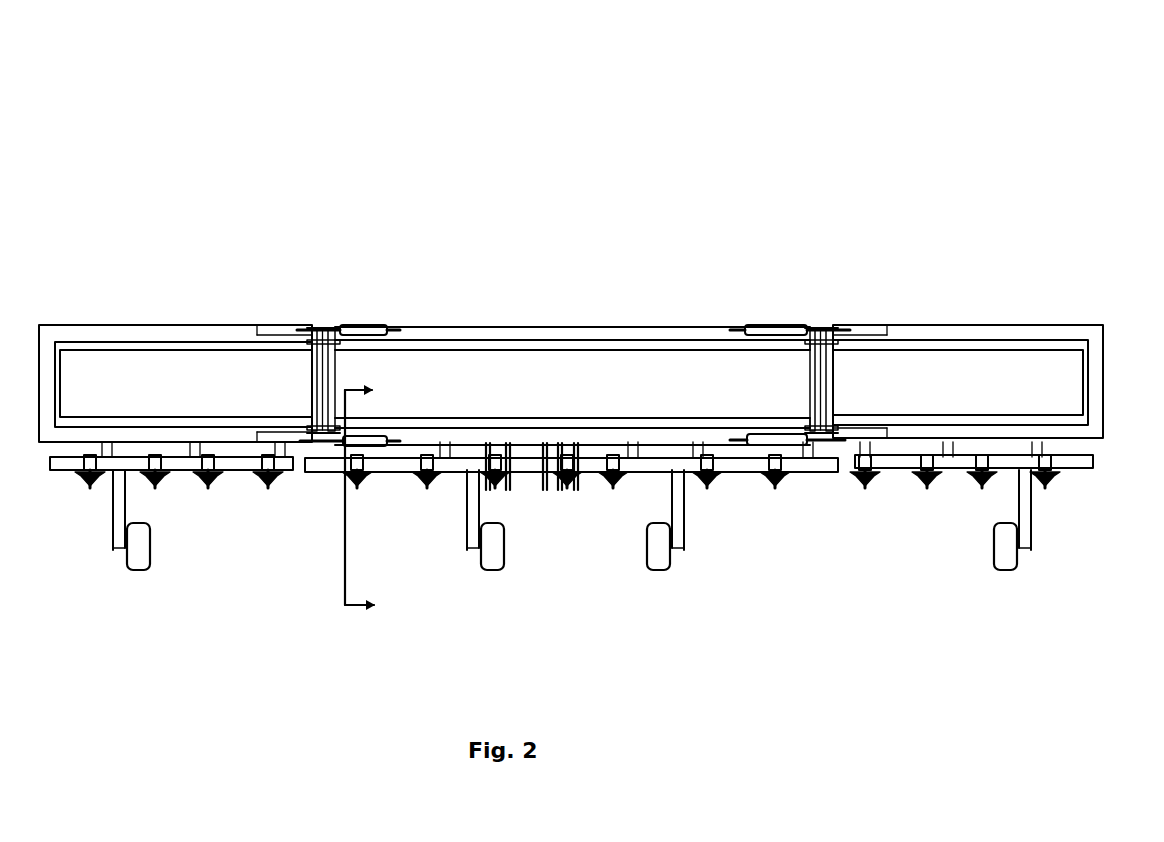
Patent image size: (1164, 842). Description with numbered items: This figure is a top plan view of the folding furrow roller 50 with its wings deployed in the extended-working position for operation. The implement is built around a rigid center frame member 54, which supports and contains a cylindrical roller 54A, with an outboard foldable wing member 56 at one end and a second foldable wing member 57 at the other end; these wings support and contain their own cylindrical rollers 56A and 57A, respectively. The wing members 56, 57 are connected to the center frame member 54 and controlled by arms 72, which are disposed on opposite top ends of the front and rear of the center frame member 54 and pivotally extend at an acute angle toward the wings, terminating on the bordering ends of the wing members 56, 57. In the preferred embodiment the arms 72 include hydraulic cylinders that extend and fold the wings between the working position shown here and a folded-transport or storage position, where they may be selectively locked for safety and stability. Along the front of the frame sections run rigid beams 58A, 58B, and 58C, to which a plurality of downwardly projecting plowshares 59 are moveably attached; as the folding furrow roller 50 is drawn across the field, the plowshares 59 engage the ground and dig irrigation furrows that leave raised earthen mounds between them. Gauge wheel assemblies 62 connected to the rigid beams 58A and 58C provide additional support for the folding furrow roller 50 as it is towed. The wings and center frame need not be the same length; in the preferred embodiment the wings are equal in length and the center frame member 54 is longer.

The folding furrow roller 50 is at (630, 96).
The center frame member 54 is at (707, 277).
The cylindrical roller 54A is at (433, 370).
The foldable wing member 56 is at (247, 323).
The cylindrical roller 56A is at (120, 390).
The foldable wing member 57 is at (953, 325).
The cylindrical roller 57A is at (975, 370).
The rigid beam 58A is at (243, 477).
The rigid beam 58B is at (595, 463).
The rigid beam 58C is at (902, 473).
The plowshares 59 is at (437, 477).
The gauge wheel assemblies 62 is at (93, 570).
The arms 72 is at (363, 323).